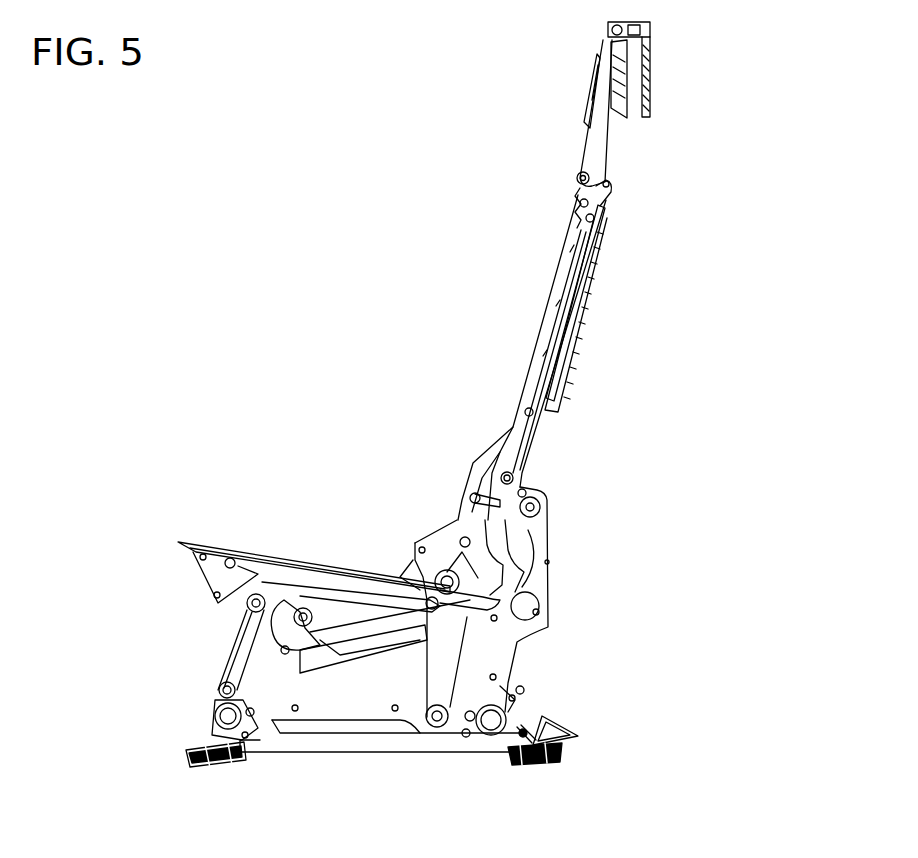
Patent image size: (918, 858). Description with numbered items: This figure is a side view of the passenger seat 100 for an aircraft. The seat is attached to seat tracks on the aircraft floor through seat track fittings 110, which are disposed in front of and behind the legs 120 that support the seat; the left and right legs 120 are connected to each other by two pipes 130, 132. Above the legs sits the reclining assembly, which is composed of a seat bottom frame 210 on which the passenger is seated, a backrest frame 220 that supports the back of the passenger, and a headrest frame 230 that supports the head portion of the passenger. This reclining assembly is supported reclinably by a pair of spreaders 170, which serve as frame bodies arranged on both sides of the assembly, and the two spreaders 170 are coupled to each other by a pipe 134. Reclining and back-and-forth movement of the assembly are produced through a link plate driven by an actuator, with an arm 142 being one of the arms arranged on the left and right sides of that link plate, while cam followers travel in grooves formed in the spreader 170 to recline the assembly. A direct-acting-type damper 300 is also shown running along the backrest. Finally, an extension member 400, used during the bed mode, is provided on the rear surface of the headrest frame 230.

The passenger seat 100 is at (642, 432).
The seat track fittings 110 is at (208, 758).
The legs 120 is at (356, 742).
The pipe 130 is at (492, 718).
The pipe 132 is at (215, 712).
The pipe 134 is at (540, 602).
The arm 142 is at (235, 658).
The spreader 170 is at (495, 650).
The seat bottom frame 210 is at (300, 575).
The backrest frame 220 is at (545, 318).
The headrest frame 230 is at (596, 148).
The direct-acting-type damper 300 is at (556, 357).
The extension member 400 is at (668, 60).